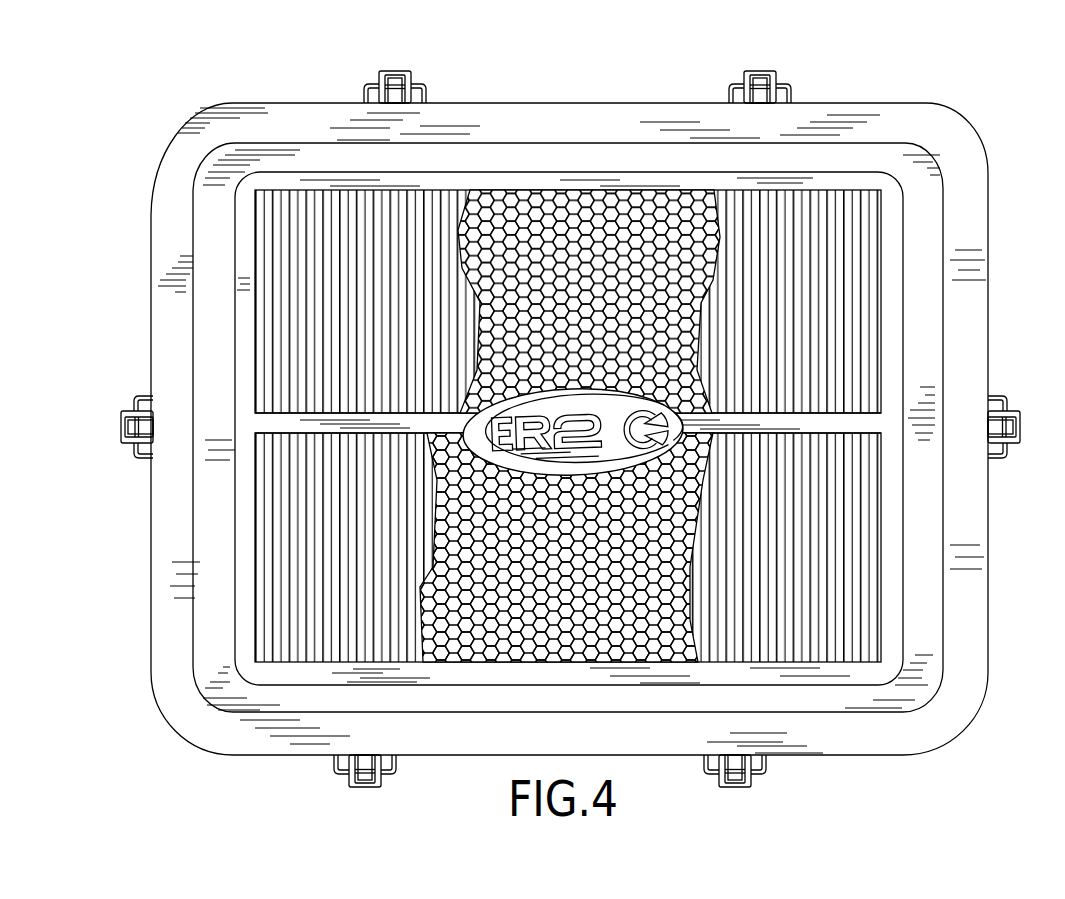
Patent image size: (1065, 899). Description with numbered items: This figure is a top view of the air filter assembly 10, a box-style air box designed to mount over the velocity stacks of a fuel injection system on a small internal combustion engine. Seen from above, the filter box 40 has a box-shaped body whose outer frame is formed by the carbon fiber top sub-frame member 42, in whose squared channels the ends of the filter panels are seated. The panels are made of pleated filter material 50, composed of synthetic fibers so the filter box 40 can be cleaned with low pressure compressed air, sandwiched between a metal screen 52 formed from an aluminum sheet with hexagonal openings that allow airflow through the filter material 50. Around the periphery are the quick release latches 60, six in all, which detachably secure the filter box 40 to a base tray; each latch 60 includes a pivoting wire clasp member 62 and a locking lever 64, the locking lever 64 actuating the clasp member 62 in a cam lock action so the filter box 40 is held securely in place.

The air filter assembly 10 is at (993, 122).
The filter box 40 is at (258, 101).
The top sub-frame member 42 is at (978, 322).
The pleated filter material 50 is at (785, 222).
The metal screen 52 is at (540, 207).
The quick release latch 60 is at (386, 67).
The pivoting wire clasp member 62 is at (424, 95).
The locking lever 64 is at (412, 73).